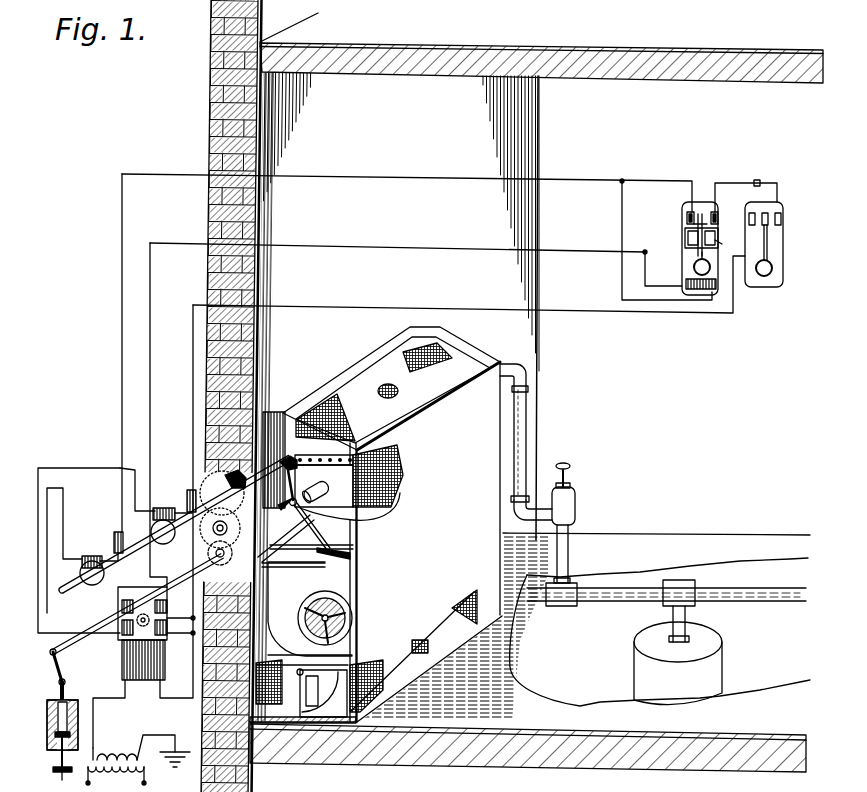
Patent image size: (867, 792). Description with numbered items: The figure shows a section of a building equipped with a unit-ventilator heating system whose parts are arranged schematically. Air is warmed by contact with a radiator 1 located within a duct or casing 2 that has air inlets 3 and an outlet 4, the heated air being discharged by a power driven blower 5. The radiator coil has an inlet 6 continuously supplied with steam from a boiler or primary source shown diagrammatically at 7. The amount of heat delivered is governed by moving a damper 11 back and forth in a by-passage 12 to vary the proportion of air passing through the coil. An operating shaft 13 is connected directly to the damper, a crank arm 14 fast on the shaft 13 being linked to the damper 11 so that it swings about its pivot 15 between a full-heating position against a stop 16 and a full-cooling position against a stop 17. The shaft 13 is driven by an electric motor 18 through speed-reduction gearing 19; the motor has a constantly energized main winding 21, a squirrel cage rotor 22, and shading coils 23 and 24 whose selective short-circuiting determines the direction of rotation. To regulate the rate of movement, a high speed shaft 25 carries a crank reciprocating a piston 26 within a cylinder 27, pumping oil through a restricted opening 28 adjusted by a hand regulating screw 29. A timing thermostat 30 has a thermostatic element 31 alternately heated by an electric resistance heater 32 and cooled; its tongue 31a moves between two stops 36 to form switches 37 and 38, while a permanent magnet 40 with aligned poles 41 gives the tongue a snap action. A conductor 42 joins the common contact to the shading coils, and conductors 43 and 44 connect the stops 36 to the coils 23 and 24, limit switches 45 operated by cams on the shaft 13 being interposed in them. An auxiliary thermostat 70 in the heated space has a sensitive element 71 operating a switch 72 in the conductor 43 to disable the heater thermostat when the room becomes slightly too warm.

The radiator 1 is at (398, 470).
The duct or casing 2 is at (333, 370).
The air inlets 3 is at (362, 690).
The outlet 4 is at (380, 378).
The blower 5 is at (347, 623).
The inlet 6 is at (517, 366).
The boiler or primary source 7 is at (640, 666).
The damper 11 is at (320, 527).
The by-passage 12 is at (236, 476).
The operating shaft 13 is at (76, 585).
The crank arm 14 is at (270, 410).
The pivot 15 is at (372, 518).
The stop 16 is at (273, 548).
The stop 17 is at (335, 551).
The electric motor 18 is at (143, 656).
The speed-reduction gearing 19 is at (205, 547).
The main winding 21 is at (140, 682).
The rotor 22 is at (143, 587).
The shading coils 23 is at (137, 620).
The shading coils 24 is at (122, 603).
The high speed shaft 25 is at (60, 655).
The piston 26 is at (60, 696).
The cylinder 27 is at (47, 730).
The restricted opening 28 is at (47, 735).
The hand regulating screw 29 is at (66, 775).
The thermostat 30 is at (692, 243).
The thermostatic element 31 is at (694, 270).
The tongue 31a is at (690, 226).
The electric resistance heater 32 is at (700, 290).
The stops 36 is at (690, 212).
The switch 37 is at (713, 212).
The switch 38 is at (694, 212).
The permanent magnet 40 is at (684, 243).
The poles 41 is at (716, 242).
The conductor 42 is at (431, 246).
The conductor 43 is at (469, 310).
The conductor 44 is at (403, 170).
The limit switches 45 is at (186, 500).
The auxiliary thermostat 70 is at (780, 230).
The sensitive element 71 is at (772, 270).
The switch 72 is at (781, 238).